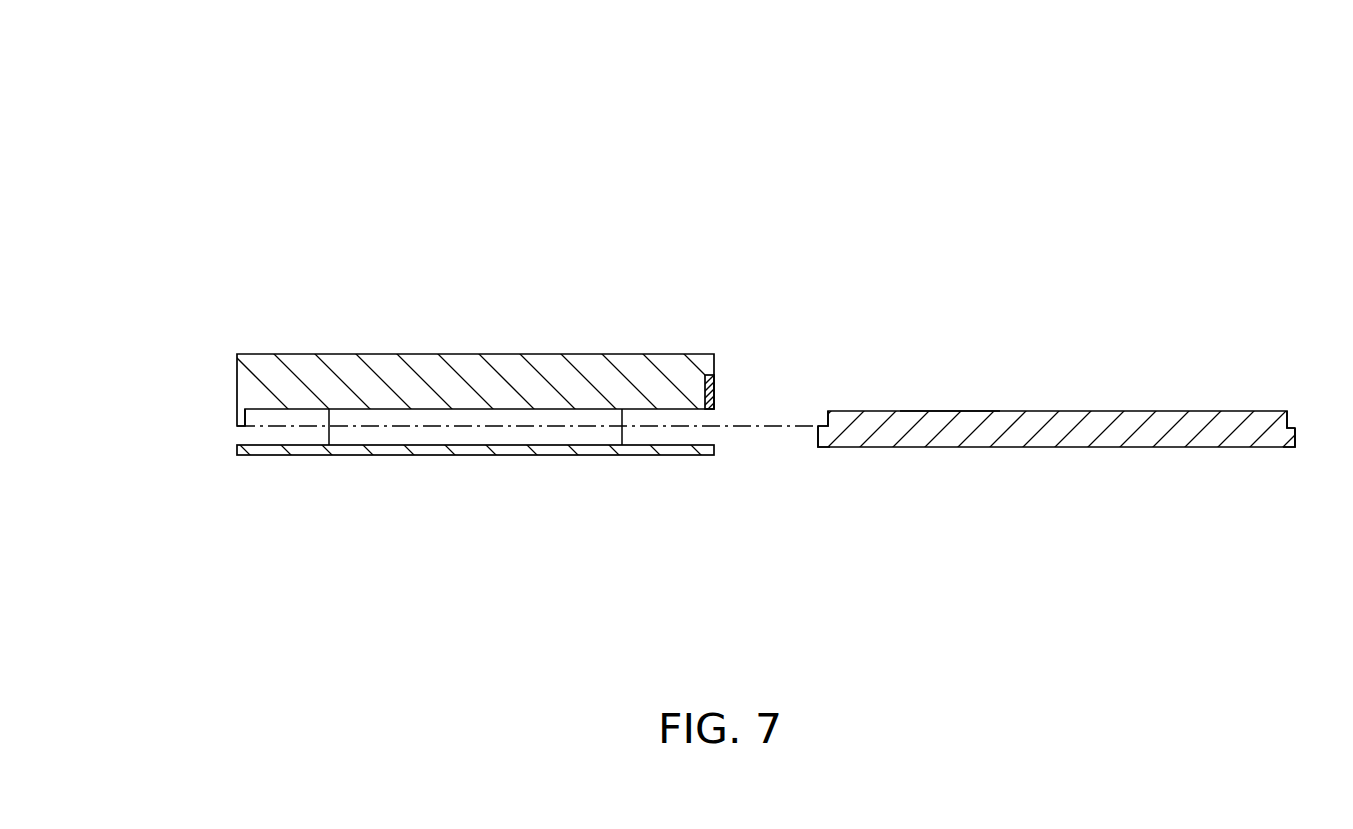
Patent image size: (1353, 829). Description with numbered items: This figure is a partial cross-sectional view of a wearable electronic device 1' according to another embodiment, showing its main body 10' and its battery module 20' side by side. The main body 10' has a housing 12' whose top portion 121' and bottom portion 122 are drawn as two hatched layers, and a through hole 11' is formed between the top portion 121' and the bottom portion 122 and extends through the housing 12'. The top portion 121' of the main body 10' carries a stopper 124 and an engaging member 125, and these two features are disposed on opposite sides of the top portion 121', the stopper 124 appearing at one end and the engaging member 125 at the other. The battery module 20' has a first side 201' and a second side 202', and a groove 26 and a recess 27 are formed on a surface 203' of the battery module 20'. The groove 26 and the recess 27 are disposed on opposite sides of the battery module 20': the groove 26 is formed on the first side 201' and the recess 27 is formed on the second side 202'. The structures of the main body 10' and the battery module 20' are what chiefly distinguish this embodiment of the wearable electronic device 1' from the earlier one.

The wearable electronic device 1' is at (720, 330).
The main body 10' is at (461, 397).
The through hole 11' is at (527, 473).
The housing 12' is at (448, 370).
The top portion 121' is at (451, 349).
The bottom portion 122 is at (240, 452).
The stopper 124 is at (246, 417).
The engaging member 125 is at (716, 392).
The battery module 20' is at (1048, 422).
The first side 201' is at (1309, 472).
The second side 202' is at (803, 471).
The surface 203' is at (950, 370).
The groove 26 is at (827, 423).
The recess 27 is at (1288, 412).